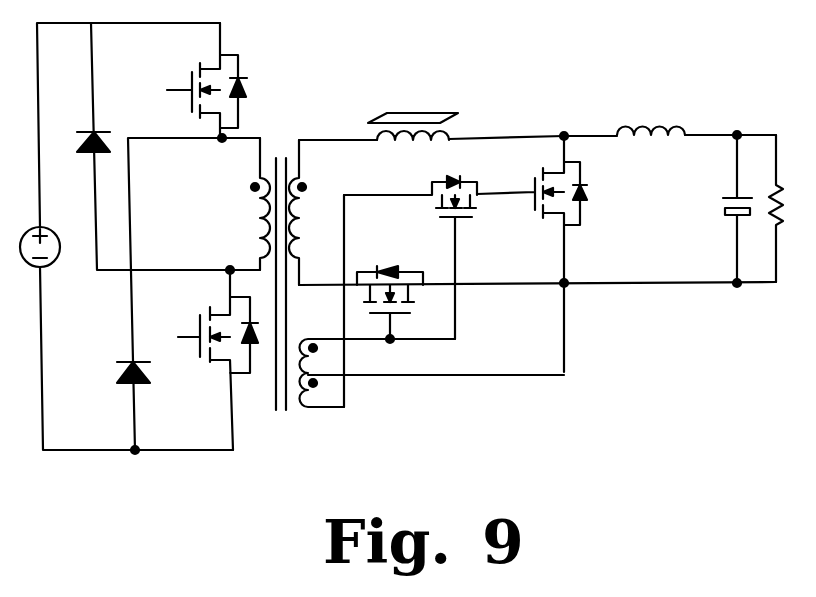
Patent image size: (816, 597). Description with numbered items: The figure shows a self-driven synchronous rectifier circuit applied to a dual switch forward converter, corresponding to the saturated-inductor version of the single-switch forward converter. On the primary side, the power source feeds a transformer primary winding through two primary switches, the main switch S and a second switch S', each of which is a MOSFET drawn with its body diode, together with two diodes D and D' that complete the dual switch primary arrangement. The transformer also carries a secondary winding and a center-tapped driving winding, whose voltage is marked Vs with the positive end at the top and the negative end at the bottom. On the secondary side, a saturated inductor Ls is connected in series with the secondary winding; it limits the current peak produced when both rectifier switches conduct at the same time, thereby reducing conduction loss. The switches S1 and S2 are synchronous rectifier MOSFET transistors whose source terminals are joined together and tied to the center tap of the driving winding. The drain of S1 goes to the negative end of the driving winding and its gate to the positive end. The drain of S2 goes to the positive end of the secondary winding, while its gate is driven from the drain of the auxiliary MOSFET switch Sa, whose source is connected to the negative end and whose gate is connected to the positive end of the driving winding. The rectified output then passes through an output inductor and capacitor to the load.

The primary-side auxiliary switch (MOSFET with body diode) S' is at (199, 80).
The primary-side diode D' is at (84, 130).
The main switch S is at (208, 360).
The primary-side diode D is at (126, 362).
The saturated inductor Ls is at (413, 108).
The auxiliary MOSFET switch Sa is at (415, 243).
The MOSFET switch S1 is at (389, 291).
The MOSFET switch S2 is at (552, 254).
The auxiliary sense winding voltage Vs is at (432, 366).